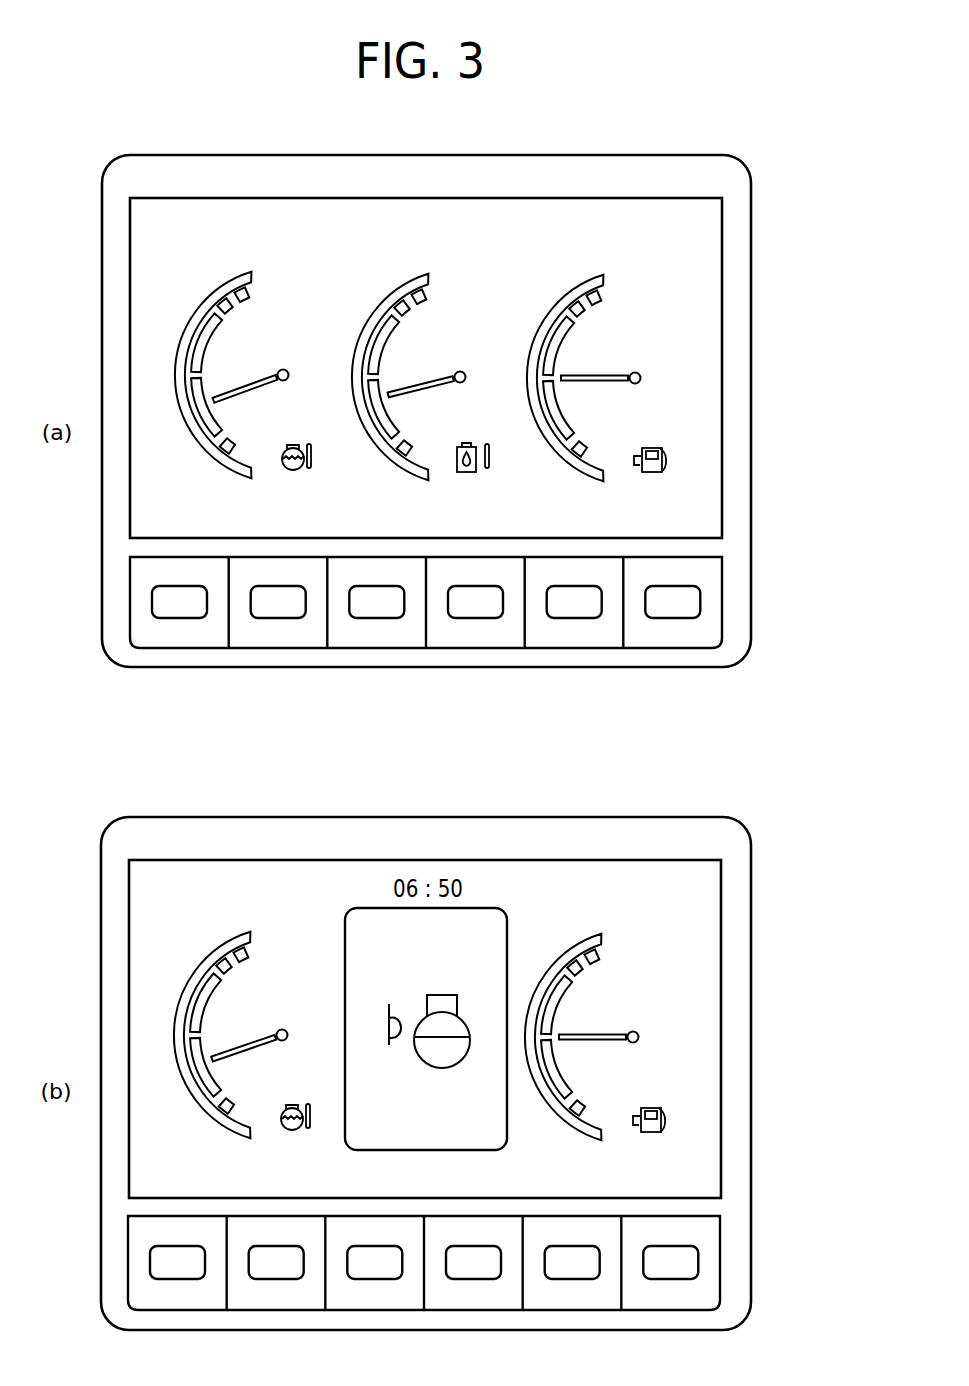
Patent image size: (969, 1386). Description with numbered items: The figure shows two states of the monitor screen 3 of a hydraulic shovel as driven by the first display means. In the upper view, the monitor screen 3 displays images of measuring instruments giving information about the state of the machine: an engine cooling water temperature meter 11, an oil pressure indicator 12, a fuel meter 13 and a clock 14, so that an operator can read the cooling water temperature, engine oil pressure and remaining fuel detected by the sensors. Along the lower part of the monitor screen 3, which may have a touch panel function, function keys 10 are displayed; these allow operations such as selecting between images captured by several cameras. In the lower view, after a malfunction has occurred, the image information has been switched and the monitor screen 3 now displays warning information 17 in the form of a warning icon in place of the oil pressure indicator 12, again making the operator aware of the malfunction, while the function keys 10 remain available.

The monitor screen 3 is at (752, 418).
The function keys 10 is at (393, 632).
The engine cooling water temperature meter 11 is at (283, 300).
The oil pressure indicator 12 is at (470, 302).
The fuel meter 13 is at (638, 328).
The clock 14 is at (390, 213).
The warning information 17 is at (490, 928).